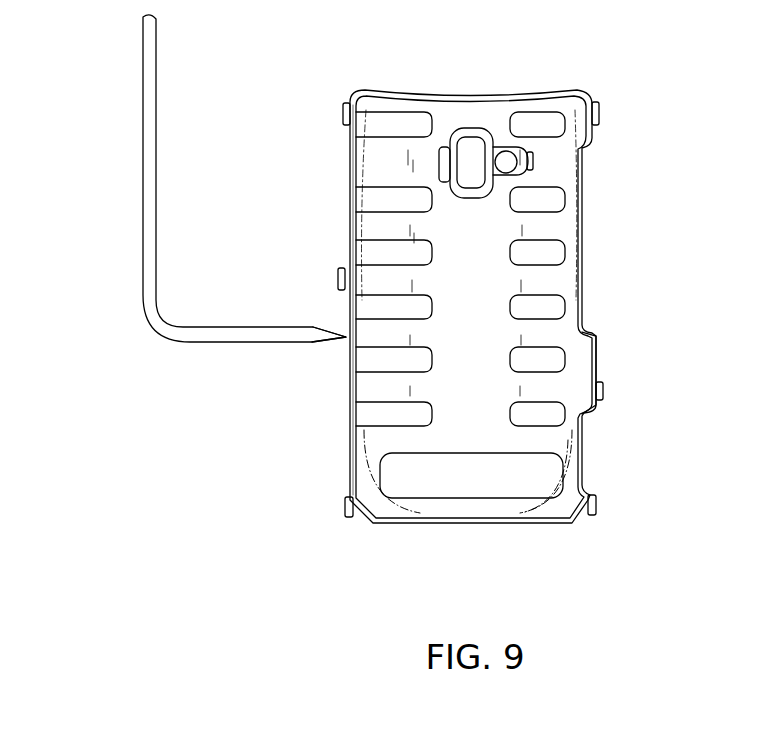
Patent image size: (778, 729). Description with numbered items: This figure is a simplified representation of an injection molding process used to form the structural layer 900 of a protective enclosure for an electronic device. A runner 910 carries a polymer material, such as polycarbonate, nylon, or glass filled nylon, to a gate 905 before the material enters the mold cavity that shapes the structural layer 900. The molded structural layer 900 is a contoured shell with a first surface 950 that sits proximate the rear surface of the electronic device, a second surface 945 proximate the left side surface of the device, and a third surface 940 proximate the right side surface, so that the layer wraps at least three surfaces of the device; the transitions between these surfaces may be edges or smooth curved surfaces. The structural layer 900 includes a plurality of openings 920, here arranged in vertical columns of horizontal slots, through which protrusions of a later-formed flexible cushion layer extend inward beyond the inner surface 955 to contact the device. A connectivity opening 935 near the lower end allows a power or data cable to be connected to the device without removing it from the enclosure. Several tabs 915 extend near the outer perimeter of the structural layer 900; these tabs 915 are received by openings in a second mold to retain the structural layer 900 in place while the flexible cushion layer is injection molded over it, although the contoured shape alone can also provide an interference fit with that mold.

The structural layer 900 is at (541, 77).
The gate 905 is at (346, 337).
The runner 910 is at (143, 150).
The tabs 915 is at (347, 110).
The plurality of openings 920 is at (398, 413).
The connectivity opening 935 is at (493, 480).
The third surface 940 is at (578, 390).
The second surface 945 is at (365, 160).
The first surface 950 is at (543, 257).
The inner surface 955 is at (560, 440).